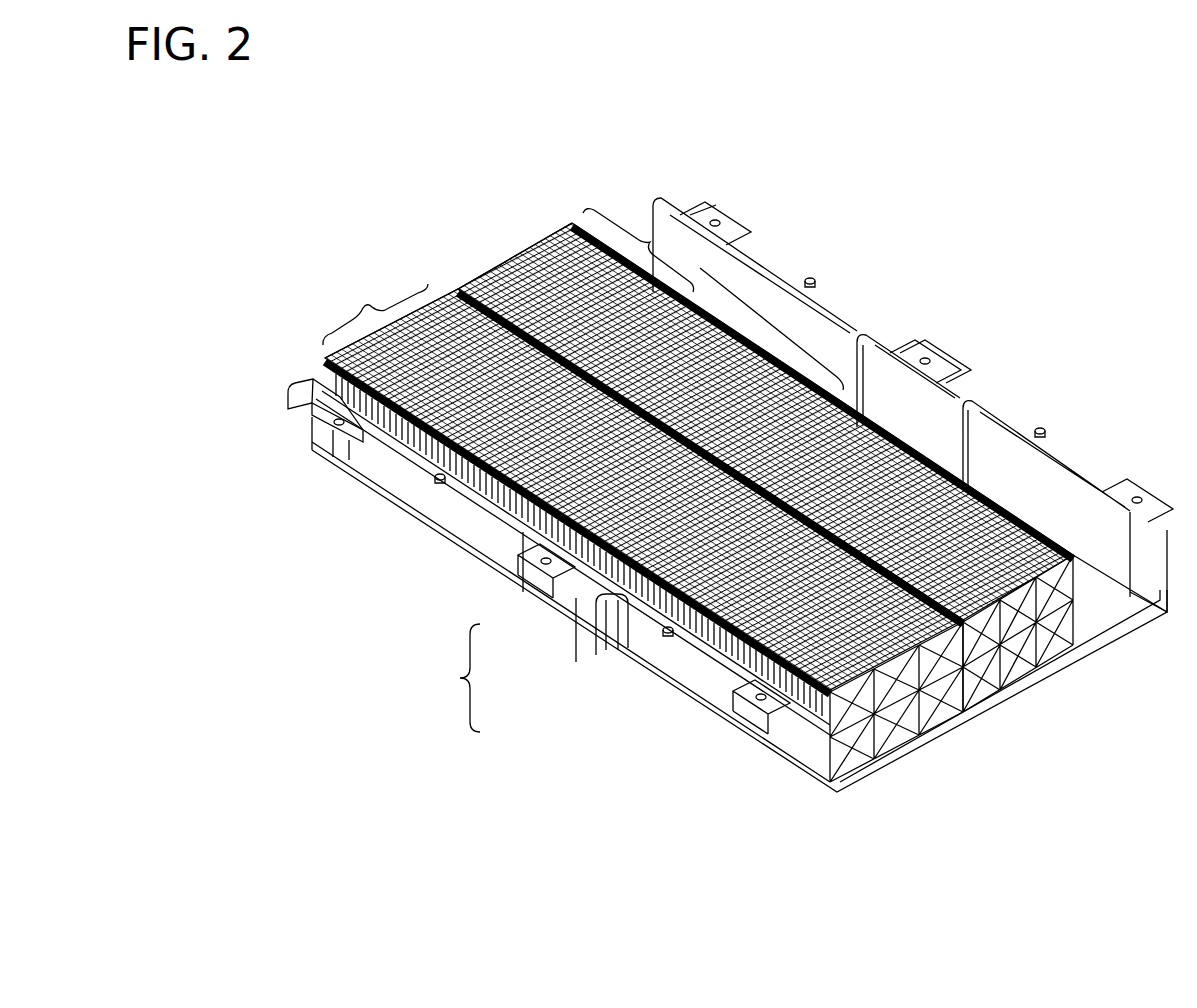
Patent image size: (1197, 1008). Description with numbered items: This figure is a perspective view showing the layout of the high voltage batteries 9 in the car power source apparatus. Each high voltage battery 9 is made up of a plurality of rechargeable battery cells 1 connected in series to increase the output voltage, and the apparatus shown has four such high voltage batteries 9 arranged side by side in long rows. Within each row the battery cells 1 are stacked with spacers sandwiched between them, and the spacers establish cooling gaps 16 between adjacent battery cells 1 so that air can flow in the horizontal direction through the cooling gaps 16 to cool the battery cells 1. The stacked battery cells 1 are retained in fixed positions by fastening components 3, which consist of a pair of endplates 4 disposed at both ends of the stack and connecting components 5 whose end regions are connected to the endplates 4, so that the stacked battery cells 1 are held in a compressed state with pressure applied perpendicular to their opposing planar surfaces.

The battery cell 1 is at (305, 412).
The fastening component 3 is at (456, 678).
The endplate 4 is at (577, 577).
The connecting component 5 is at (607, 633).
The high voltage battery 9 is at (990, 842).
The cooling gap 16 is at (400, 436).